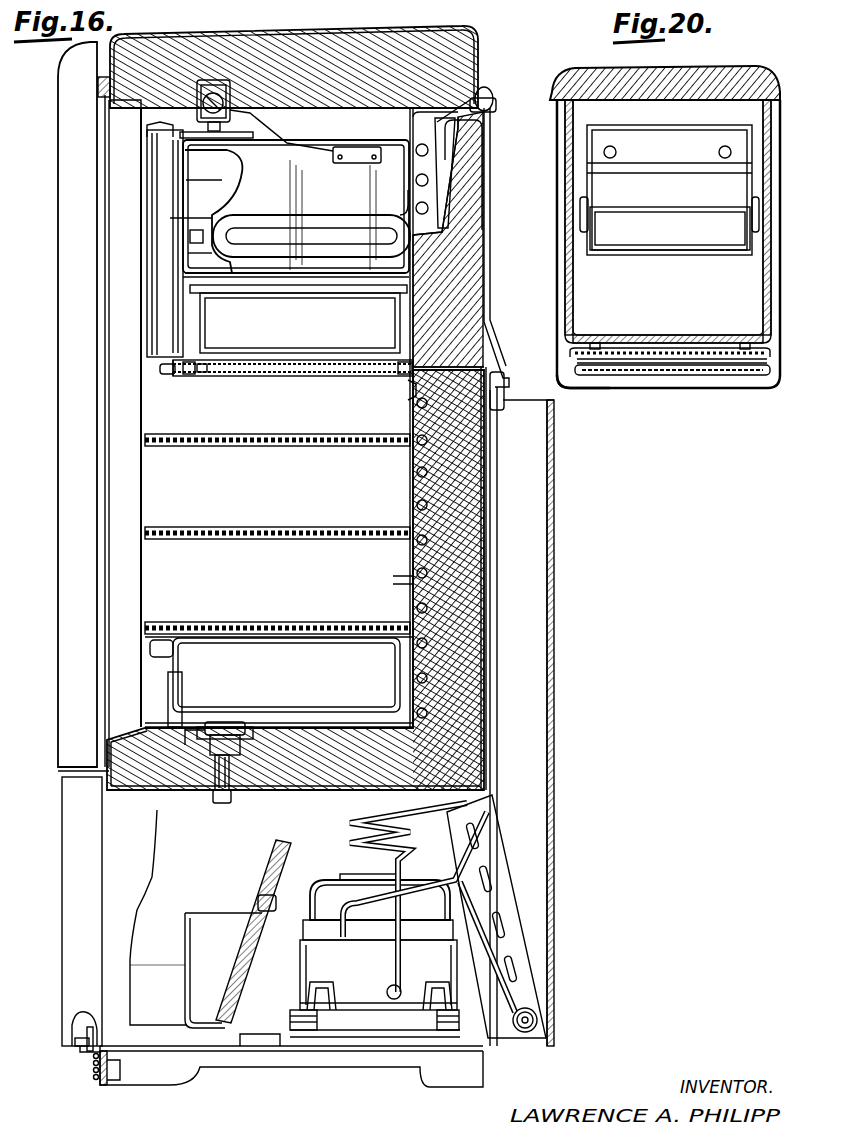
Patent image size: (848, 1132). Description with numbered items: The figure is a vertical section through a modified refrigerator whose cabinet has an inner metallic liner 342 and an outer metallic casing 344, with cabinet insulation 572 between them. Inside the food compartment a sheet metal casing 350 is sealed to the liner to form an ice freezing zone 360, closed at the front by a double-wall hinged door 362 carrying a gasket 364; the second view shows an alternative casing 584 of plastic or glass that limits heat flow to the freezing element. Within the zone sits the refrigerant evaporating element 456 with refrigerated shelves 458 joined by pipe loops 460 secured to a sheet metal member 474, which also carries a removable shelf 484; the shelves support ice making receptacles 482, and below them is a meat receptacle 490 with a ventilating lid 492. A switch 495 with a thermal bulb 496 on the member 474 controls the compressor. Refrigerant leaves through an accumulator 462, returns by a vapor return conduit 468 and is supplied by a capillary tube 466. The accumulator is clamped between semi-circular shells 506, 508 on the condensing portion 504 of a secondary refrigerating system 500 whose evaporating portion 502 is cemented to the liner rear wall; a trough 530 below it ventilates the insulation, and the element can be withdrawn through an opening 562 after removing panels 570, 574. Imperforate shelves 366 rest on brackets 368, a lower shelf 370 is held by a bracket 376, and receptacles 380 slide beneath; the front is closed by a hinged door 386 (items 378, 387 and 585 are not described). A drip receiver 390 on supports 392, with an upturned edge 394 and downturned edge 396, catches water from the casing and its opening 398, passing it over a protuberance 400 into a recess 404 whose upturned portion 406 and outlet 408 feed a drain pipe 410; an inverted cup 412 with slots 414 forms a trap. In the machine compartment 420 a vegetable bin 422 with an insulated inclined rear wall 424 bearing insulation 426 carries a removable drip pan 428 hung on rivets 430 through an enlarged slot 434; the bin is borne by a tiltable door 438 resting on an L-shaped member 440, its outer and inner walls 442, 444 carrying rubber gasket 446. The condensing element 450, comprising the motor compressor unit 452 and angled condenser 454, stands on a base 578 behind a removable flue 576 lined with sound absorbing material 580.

In FIG. 16, the inner metallic liner 342 is at (417, 553).
In FIG. 20, the inner metallic liner 342 is at (603, 387).
In FIG. 16, the outer metallic casing 344 is at (486, 548).
In FIG. 16, the sheet metal casing 350 is at (227, 370).
In FIG. 16, the ice freezing zone 360 is at (200, 202).
In FIG. 16, the hinged door 362 is at (147, 170).
In FIG. 16, the gasket 364 is at (163, 132).
In FIG. 16, the imperforate shelves 366 is at (205, 452).
In FIG. 16, the brackets 368 is at (252, 520).
In FIG. 16, the shelf 370 is at (160, 623).
In FIG. 16, the bracket 376 is at (173, 685).
In FIG. 16, the liner fastening 378 is at (393, 587).
In FIG. 16, the receptacles 380 is at (183, 662).
In FIG. 16, the hinged door 386 is at (78, 470).
In FIG. 16, the door gasket 387 is at (98, 80).
In FIG. 16, the drip receiver 390 is at (247, 374).
In FIG. 20, the drip receiver 390 is at (713, 360).
In FIG. 16, the supports 392 is at (200, 378).
In FIG. 16, the upturned edge 394 is at (173, 367).
In FIG. 16, the downturned edge 396 is at (403, 377).
In FIG. 16, the opening 398 is at (286, 413).
In FIG. 16, the protuberance 400 is at (410, 390).
In FIG. 20, the protuberance 400 is at (747, 367).
In FIG. 16, the recess 404 is at (187, 733).
In FIG. 16, the upturned bent portion 406 is at (247, 727).
In FIG. 16, the outlet 408 is at (213, 780).
In FIG. 16, the drain pipe 410 is at (230, 800).
In FIG. 16, the inverted cup 412 is at (218, 727).
In FIG. 16, the slots 414 is at (278, 792).
In FIG. 16, the machine compartment 420 is at (278, 985).
In FIG. 16, the vegetable bin 422 is at (137, 927).
In FIG. 16, the inclined rear wall 424 is at (267, 870).
In FIG. 16, the sound insulating and heat insulating material 426 is at (283, 857).
In FIG. 16, the removable drip pan 428 is at (183, 965).
In FIG. 16, the rivets 430 is at (247, 900).
In FIG. 16, the enlarged slot 434 is at (247, 917).
In FIG. 16, the tiltable door 438 is at (83, 907).
In FIG. 16, the L-shaped member 440 is at (97, 1057).
In FIG. 16, the outer wall 442 is at (85, 1045).
In FIG. 16, the inner wall 444 is at (117, 1046).
In FIG. 16, the rubber gasket material 446 is at (87, 1052).
In FIG. 16, the condensing element 450 is at (353, 872).
In FIG. 16, the motor compressor unit 452 is at (360, 992).
In FIG. 16, the condenser 454 is at (503, 943).
In FIG. 20, the refrigerant evaporating element 456 is at (707, 286).
In FIG. 16, the refrigerated shelves 458 is at (193, 267).
In FIG. 16, the pipe loops 460 is at (277, 245).
In FIG. 16, the refrigerant accumulator 462 is at (420, 133).
In FIG. 16, the capillary tube 466 is at (498, 758).
In FIG. 16, the vapor return conduit 468 is at (491, 735).
In FIG. 16, the sheet metal member 474 is at (269, 108).
In FIG. 16, the ice making receptacles 482 is at (210, 250).
In FIG. 16, the removable shelf 484 is at (193, 218).
In FIG. 16, the receptacle 490 is at (210, 313).
In FIG. 16, the lid 492 is at (193, 285).
In FIG. 16, the switch 495 is at (297, 183).
In FIG. 16, the thermal bulb 496 is at (385, 147).
In FIG. 16, the secondary refrigerating system 500 is at (430, 473).
In FIG. 16, the evaporating portion 502 is at (427, 187).
In FIG. 16, the condensing portion 504 is at (423, 157).
In FIG. 16, the semi-circular shell 506 is at (473, 87).
In FIG. 16, the semi-circular shell 508 is at (437, 122).
In FIG. 16, the trough 530 is at (433, 200).
In FIG. 16, the opening 562 is at (443, 230).
In FIG. 16, the removable panel 570 is at (490, 263).
In FIG. 16, the cabinet insulation 572 is at (457, 283).
In FIG. 16, the removable panel 574 is at (427, 308).
In FIG. 16, the flue 576 is at (557, 641).
In FIG. 16, the base 578 is at (367, 1046).
In FIG. 16, the sound insulating and absorbing material 580 is at (555, 685).
In FIG. 20, the casing 584 is at (573, 303).
In FIG. 20, the drip pan rail 585 is at (670, 347).